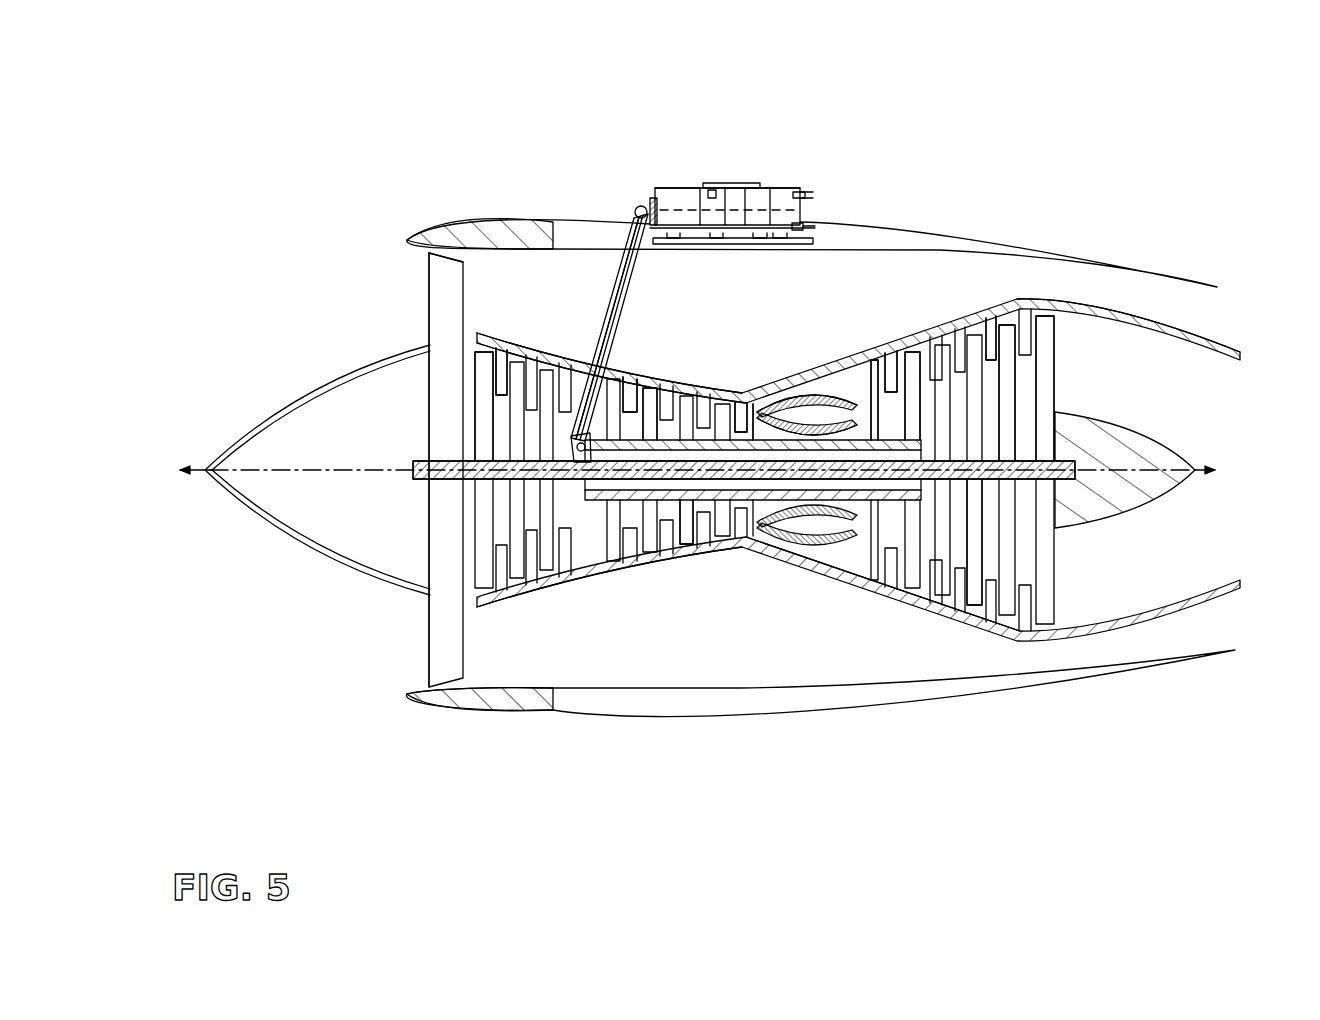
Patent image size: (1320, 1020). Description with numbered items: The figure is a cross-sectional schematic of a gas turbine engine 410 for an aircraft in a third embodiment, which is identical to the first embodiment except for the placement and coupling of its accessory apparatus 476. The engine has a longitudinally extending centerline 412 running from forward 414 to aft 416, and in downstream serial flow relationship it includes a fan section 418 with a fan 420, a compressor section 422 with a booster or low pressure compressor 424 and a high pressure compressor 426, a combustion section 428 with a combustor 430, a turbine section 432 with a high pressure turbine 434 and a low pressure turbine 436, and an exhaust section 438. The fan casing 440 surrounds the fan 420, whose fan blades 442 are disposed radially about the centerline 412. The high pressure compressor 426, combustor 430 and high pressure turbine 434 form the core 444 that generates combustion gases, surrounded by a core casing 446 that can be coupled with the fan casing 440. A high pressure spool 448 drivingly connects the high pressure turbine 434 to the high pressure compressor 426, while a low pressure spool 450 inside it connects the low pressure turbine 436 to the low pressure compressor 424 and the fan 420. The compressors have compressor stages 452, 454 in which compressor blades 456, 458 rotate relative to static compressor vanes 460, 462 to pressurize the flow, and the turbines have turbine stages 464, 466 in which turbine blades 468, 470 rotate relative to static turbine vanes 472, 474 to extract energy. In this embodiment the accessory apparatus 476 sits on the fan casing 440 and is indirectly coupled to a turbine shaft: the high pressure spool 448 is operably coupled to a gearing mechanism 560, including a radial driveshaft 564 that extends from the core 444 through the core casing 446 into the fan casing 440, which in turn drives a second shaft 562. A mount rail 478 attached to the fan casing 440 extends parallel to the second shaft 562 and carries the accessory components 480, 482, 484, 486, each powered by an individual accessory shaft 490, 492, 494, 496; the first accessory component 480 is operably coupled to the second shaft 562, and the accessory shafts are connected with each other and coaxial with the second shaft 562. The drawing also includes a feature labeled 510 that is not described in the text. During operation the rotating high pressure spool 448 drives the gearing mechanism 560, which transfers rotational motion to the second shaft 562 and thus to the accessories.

The gas turbine engine 410 is at (313, 177).
The centerline 412 is at (231, 468).
The forward direction 414 is at (176, 470).
The aft direction 416 is at (1229, 470).
The fan section 418 is at (467, 744).
The fan 420 is at (427, 303).
The compressor section 422 is at (470, 744).
The low pressure compressor 424 is at (587, 594).
The high pressure compressor 426 is at (707, 573).
The combustion section 428 is at (870, 744).
The combustor 430 is at (853, 383).
The turbine section 432 is at (1050, 744).
The high pressure turbine 434 is at (864, 593).
The low pressure turbine 436 is at (966, 622).
The exhaust section 438 is at (1052, 744).
The fan casing 440 is at (437, 222).
The fan blades 442 is at (440, 643).
The core 444 is at (921, 636).
The core casing 446 is at (790, 382).
The high pressure spool 448 is at (743, 392).
The low pressure spool 450 is at (540, 432).
The compressor stages 452 is at (474, 315).
The compressor stages 454 is at (577, 346).
The compressor blades 456 is at (478, 348).
The compressor blades 458 is at (638, 394).
The static compressor vanes 460 is at (503, 396).
The static compressor vanes 462 is at (652, 405).
The turbine stages 464 is at (886, 342).
The turbine stages 466 is at (988, 303).
The turbine blades 468 is at (912, 388).
The turbine blades 470 is at (1008, 350).
The static turbine vanes 472 is at (908, 380).
The static turbine vanes 474 is at (1002, 345).
The accessory apparatus 476 is at (679, 172).
The mount rail 478 is at (828, 232).
The first accessory component 480 is at (668, 186).
The accessory component 482 is at (700, 186).
The accessory component 484 is at (753, 186).
The accessory component 486 is at (783, 190).
The accessory shaft 490 is at (655, 188).
The accessory shaft 492 is at (698, 186).
The accessory shaft 494 is at (770, 186).
The accessory shaft 496 is at (805, 194).
The actuator chamber 510 is at (740, 186).
The gearing mechanism 560 is at (616, 228).
The second shaft 562 is at (636, 208).
The radial driveshaft 564 is at (620, 278).